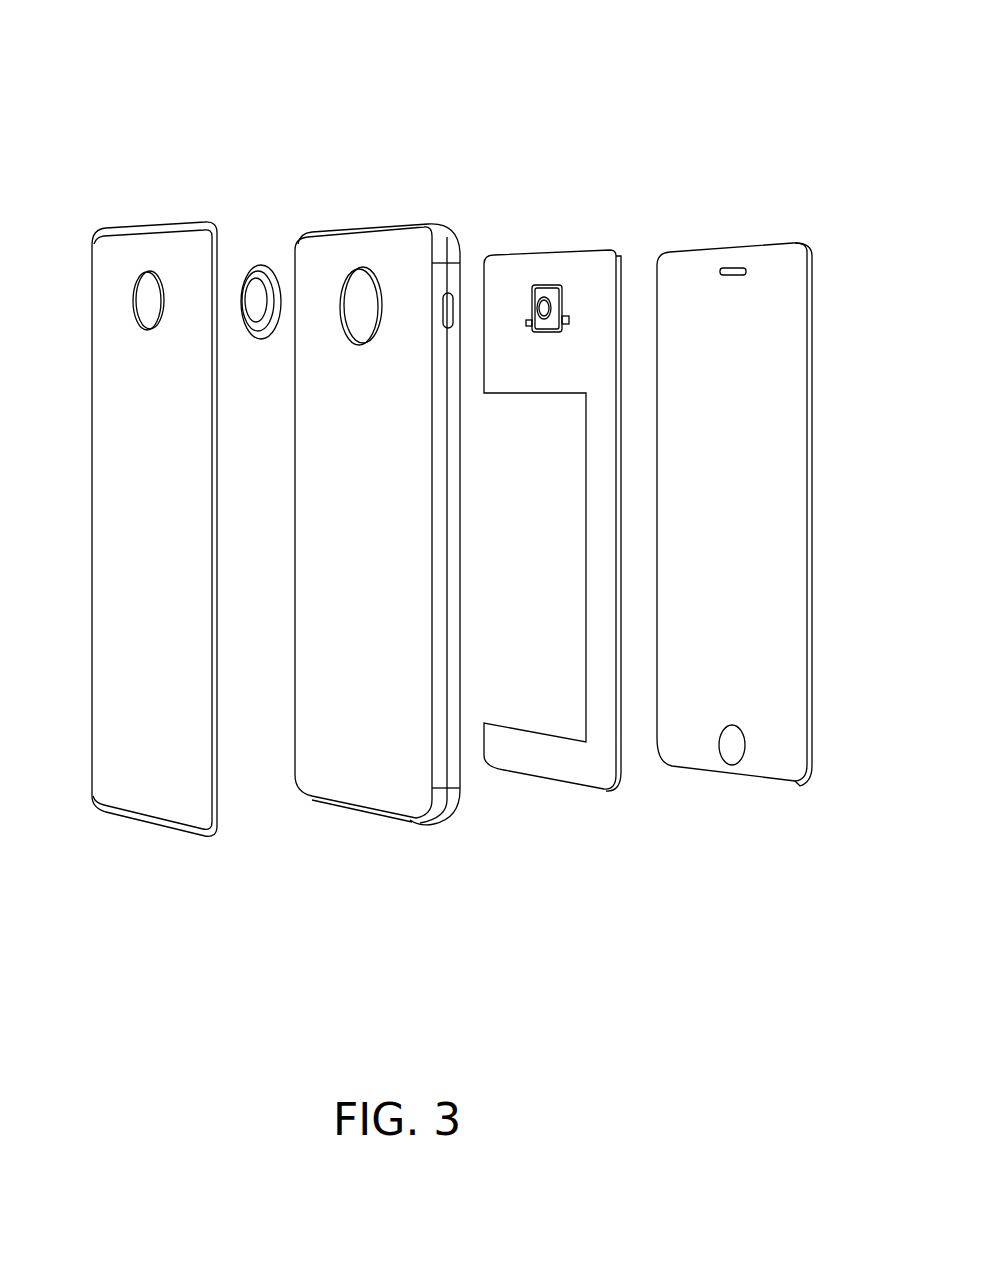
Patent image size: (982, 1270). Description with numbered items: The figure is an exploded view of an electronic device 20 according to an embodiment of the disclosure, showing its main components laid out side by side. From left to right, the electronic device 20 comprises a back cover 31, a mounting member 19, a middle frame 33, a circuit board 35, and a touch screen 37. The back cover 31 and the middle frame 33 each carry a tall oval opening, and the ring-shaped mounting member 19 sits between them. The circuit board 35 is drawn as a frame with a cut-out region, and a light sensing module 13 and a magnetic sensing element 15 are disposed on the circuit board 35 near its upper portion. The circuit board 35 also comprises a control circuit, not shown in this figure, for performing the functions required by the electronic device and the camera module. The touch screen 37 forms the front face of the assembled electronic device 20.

The electronic device 20 is at (477, 31).
The light sensing module 13 is at (548, 283).
The magnetic sensing element 15 is at (570, 322).
The mounting member 19 is at (268, 265).
The back cover 31 is at (157, 235).
The middle frame 33 is at (380, 228).
The circuit board 35 is at (526, 415).
The touch screen 37 is at (780, 243).